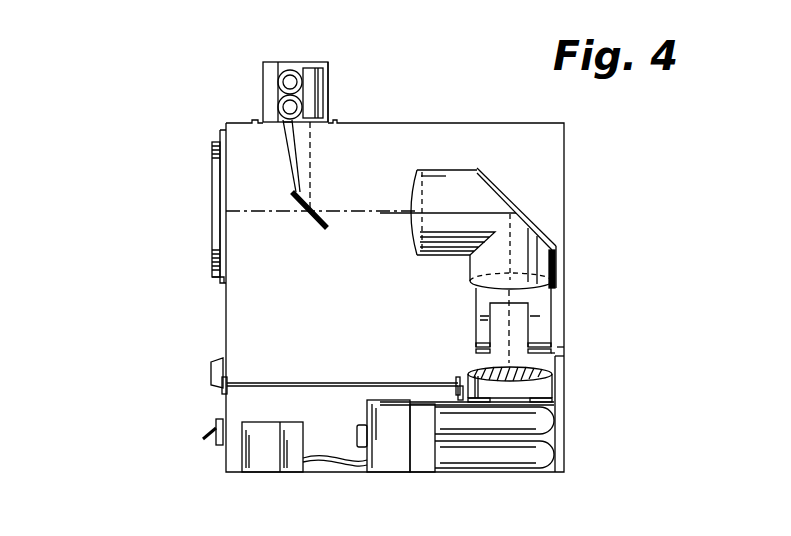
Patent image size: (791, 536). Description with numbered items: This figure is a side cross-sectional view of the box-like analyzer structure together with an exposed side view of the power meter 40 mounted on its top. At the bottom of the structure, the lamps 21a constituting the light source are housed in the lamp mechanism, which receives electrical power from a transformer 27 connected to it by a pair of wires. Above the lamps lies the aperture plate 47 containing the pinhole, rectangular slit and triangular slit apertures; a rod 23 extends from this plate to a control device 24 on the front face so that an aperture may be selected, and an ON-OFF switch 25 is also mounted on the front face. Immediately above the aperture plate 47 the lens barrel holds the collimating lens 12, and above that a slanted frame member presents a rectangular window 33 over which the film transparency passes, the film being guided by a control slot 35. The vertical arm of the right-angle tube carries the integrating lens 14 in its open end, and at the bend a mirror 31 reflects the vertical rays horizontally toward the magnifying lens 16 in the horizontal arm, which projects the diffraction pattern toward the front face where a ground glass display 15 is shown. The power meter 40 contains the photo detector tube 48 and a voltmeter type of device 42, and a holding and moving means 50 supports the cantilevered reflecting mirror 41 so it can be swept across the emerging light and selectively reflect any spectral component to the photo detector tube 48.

The photo detector tube 48 is at (344, 64).
The voltmeter type of device 42 is at (264, 80).
The power meter device 40 is at (329, 100).
The mirror holding and moving means 50 is at (282, 125).
The cantilevered reflecting mirror 41 is at (312, 212).
The ground glass display 15 is at (212, 186).
The magnifying lens 16 is at (412, 184).
The mirror 31 is at (523, 217).
The integrating lens 14 is at (556, 272).
The rectangular window 33 is at (518, 332).
The control slot 35 is at (562, 352).
The collimating lens 12 is at (553, 363).
The aperture plate 47 is at (545, 401).
The rod 23 is at (342, 385).
The lamps 21a is at (542, 437).
The transformer 27 is at (239, 472).
The control device 24 is at (210, 380).
The ON-OFF switch 25 is at (220, 440).